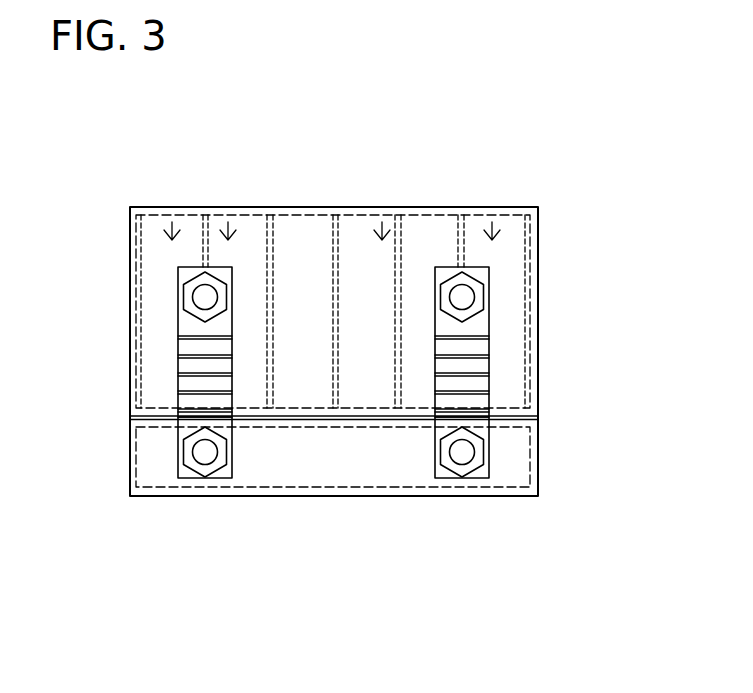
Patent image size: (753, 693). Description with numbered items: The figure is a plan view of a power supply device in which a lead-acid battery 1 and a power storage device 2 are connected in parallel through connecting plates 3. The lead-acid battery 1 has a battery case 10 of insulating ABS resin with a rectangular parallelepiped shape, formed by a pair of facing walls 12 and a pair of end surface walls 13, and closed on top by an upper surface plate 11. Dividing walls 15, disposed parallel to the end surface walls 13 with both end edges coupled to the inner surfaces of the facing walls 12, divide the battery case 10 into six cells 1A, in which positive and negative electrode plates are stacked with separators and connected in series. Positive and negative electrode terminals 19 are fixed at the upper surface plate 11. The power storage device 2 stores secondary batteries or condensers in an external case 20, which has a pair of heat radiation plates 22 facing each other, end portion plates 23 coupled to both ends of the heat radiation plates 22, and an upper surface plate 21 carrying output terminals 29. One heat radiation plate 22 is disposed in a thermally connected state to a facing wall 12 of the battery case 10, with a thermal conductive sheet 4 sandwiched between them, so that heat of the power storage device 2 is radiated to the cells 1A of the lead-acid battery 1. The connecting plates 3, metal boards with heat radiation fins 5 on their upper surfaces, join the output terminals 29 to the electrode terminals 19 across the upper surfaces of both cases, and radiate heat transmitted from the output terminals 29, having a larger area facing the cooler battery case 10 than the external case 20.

The lead-acid battery 1 is at (589, 204).
The cell 1A is at (176, 207).
The power storage device 2 is at (567, 463).
The connecting plate 3 is at (197, 402).
The thermal conductive sheet 4 is at (300, 420).
The heat radiation fin 5 is at (192, 330).
The battery case 10 is at (530, 118).
The upper surface plate 11 is at (303, 283).
The facing wall 12 is at (358, 407).
The end surface wall 13 is at (148, 265).
The dividing wall 15 is at (212, 255).
The electrode terminal 19 is at (203, 297).
The external case 20 is at (502, 625).
The upper surface plate 21 is at (388, 458).
The heat radiation plate 22 is at (263, 442).
The end portion plate 23 is at (139, 450).
The output terminal 29 is at (205, 455).